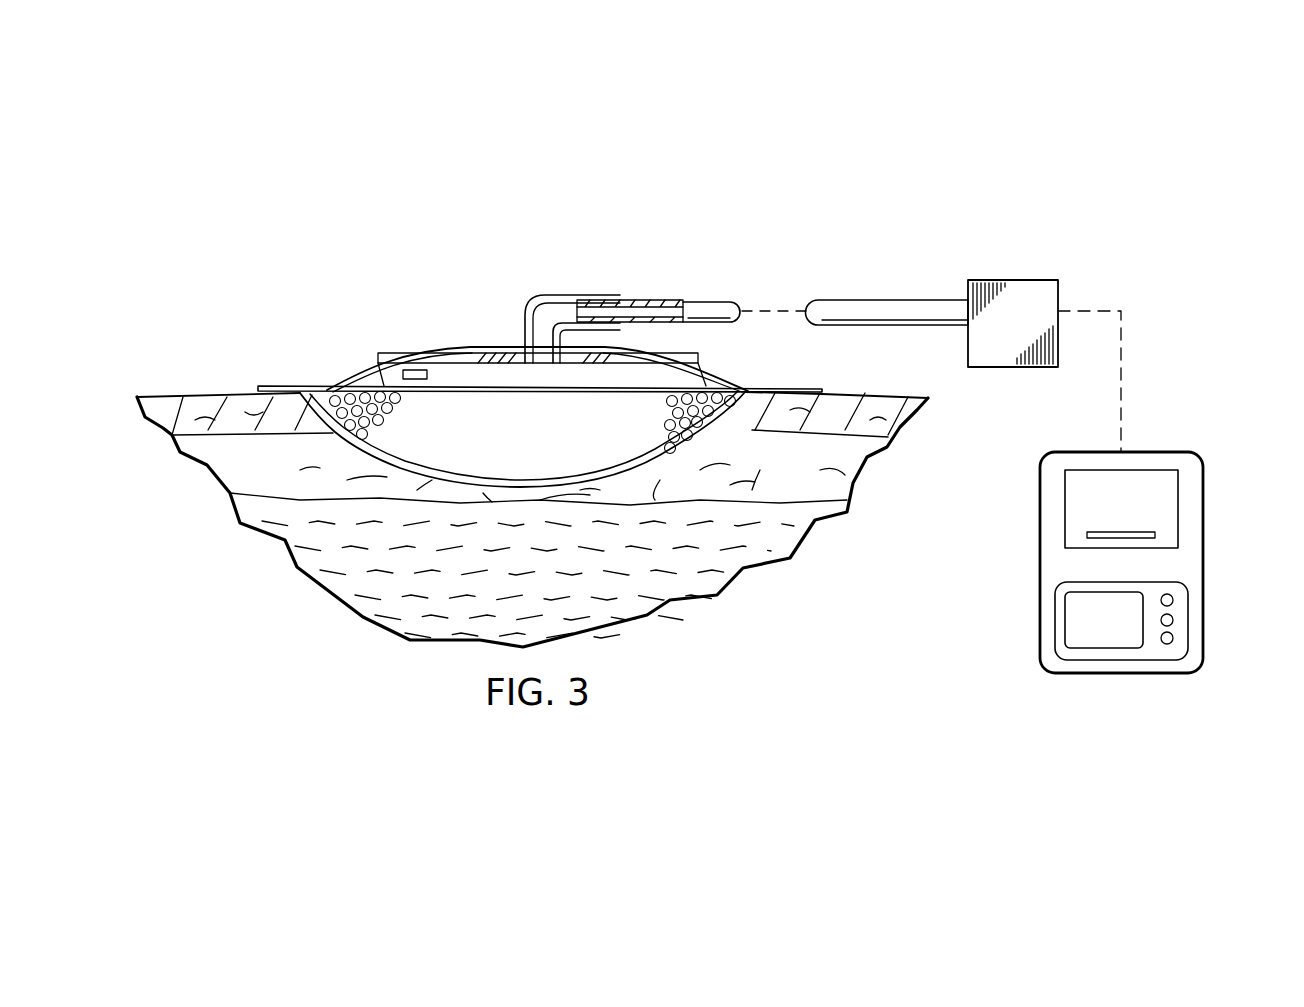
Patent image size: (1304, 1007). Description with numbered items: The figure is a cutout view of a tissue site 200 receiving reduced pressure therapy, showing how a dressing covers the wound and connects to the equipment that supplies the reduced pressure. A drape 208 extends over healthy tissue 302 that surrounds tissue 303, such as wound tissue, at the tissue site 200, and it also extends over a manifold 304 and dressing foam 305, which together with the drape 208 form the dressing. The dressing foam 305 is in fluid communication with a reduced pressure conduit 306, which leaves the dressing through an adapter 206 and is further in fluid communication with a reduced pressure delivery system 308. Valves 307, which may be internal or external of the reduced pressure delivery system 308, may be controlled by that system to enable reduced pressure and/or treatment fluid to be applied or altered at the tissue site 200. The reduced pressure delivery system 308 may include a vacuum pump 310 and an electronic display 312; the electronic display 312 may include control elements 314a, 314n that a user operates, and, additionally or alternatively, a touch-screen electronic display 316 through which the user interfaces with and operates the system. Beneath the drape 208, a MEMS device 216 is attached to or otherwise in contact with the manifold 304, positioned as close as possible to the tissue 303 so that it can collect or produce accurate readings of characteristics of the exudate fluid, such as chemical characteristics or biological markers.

The tissue site 200 is at (352, 199).
The adapter 206 is at (582, 297).
The drape 208 is at (283, 387).
The MEMS device 216 is at (414, 368).
The healthy tissue 302 is at (205, 395).
The tissue 303 is at (357, 452).
The manifold 304 is at (523, 380).
The dressing foam 305 is at (360, 397).
The reduced pressure conduit 306 is at (710, 298).
The valves 307 is at (1035, 280).
The reduced pressure delivery system 308 is at (1133, 560).
The vacuum pump 310 is at (1152, 468).
The electronic display 312 is at (1055, 622).
The control element 314a is at (1173, 598).
The control element 314n is at (1173, 636).
The touch-screen electronic display 316 is at (1103, 650).